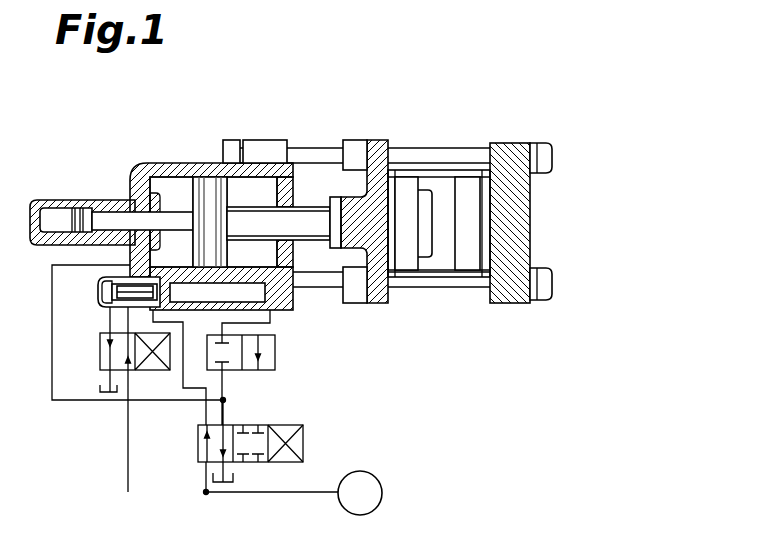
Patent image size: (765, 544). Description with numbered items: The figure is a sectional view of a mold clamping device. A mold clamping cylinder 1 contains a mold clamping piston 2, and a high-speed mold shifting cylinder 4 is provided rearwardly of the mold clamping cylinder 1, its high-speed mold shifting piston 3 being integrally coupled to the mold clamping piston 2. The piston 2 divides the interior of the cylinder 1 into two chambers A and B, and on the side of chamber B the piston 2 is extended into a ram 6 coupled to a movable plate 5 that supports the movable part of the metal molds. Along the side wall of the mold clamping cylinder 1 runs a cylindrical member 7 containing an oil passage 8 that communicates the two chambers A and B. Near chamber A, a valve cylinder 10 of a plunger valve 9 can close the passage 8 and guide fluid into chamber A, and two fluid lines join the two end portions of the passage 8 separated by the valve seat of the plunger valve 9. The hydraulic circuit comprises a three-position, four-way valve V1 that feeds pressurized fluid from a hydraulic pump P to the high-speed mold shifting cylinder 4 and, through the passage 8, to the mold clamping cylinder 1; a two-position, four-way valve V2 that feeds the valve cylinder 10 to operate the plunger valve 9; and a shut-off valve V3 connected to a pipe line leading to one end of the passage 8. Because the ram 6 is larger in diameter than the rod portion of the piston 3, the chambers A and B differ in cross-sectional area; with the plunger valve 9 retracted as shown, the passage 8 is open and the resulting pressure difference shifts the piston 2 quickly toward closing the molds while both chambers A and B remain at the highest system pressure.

The mold clamping cylinder 1 is at (186, 168).
The mold clamping piston 2 is at (208, 168).
The high-speed mold shifting piston 3 is at (112, 214).
The high-speed mold shifting cylinder 4 is at (62, 204).
The movable plate 5 is at (378, 155).
The ram 6 is at (318, 165).
The cylindrical member 7 is at (290, 303).
The oil passage 8 is at (262, 311).
The plunger valve 9 is at (120, 302).
The valve cylinder 10 is at (110, 290).
The chamber A is at (172, 172).
The chamber B is at (255, 168).
The three-position four-way valve V1 is at (303, 443).
The two-position four-way valve V2 is at (102, 357).
The shut-off valve V3 is at (252, 371).
The hydraulic pump P is at (360, 493).